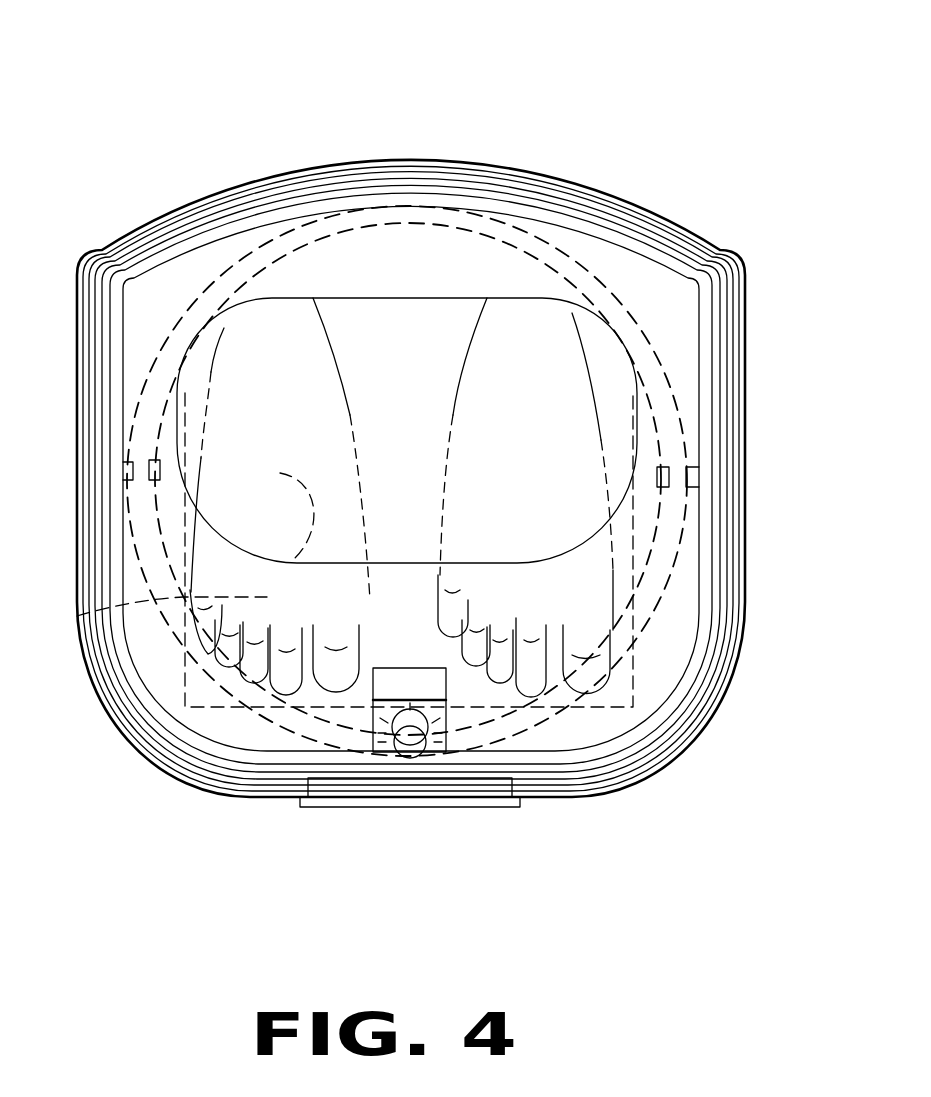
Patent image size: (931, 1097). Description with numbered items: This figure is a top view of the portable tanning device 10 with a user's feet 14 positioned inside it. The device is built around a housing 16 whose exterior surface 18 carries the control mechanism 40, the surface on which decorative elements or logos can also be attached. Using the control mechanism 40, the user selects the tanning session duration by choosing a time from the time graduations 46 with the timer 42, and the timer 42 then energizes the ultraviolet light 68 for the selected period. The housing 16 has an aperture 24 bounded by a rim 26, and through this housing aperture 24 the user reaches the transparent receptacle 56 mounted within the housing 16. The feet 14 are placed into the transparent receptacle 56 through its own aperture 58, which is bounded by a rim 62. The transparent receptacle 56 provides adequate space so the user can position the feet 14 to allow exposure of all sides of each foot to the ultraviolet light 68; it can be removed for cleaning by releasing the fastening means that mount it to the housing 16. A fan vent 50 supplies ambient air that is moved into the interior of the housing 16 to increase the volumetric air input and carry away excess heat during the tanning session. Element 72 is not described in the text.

The portable tanning device 10 is at (237, 135).
The feet 14 is at (467, 602).
The housing 16 is at (563, 160).
The exterior surface 18 is at (145, 245).
The aperture 24 is at (517, 522).
The rim 26 is at (590, 555).
The control mechanism 40 is at (419, 684).
The timer 42 is at (407, 740).
The time graduations 46 is at (427, 714).
The fan vent 50 is at (410, 808).
The transparent receptacle 56 is at (440, 330).
The aperture 58 is at (347, 352).
The rim 62 is at (280, 500).
The ultraviolet light 68 is at (93, 692).
The latch 72 is at (149, 470).